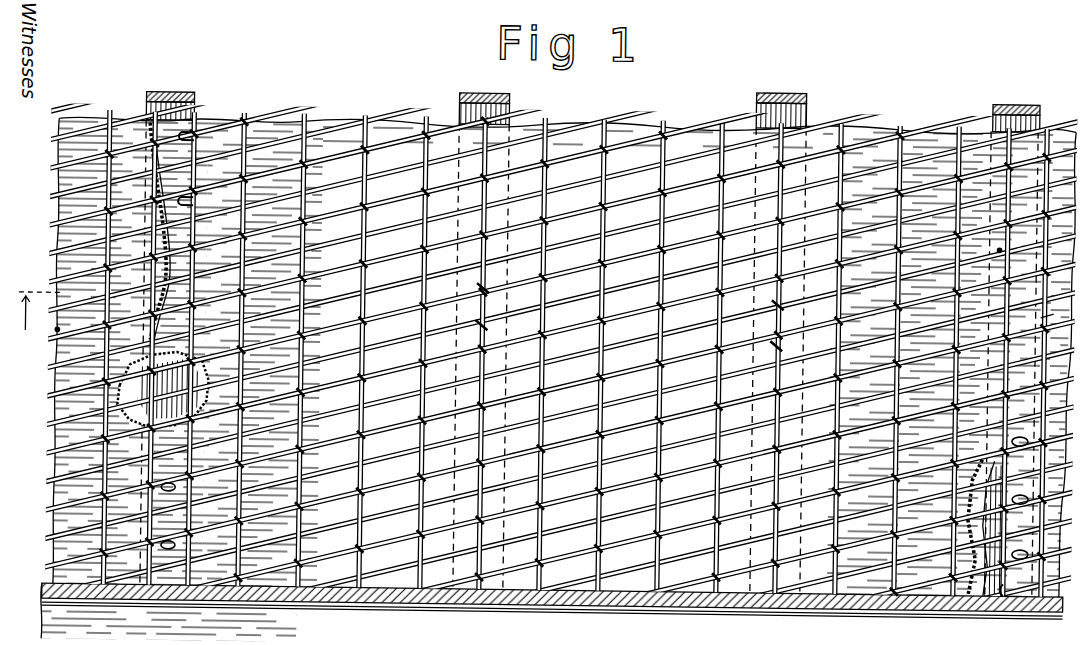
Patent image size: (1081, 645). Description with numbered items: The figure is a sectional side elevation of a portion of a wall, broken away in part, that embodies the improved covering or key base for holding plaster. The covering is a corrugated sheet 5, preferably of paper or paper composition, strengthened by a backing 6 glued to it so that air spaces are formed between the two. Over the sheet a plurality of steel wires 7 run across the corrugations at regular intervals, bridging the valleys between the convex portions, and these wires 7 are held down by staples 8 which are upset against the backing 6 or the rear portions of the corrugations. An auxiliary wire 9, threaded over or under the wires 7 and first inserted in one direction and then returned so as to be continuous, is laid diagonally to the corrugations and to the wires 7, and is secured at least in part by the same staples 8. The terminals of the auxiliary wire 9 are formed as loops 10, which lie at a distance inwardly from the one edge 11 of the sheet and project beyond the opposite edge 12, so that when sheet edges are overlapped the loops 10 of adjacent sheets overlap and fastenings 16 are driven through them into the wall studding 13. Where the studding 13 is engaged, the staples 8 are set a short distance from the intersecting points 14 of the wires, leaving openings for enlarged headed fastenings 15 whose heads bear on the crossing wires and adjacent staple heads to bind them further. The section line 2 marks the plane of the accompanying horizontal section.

The section line 2— 2 is at (535, 314).
The corrugated sheet 5 is at (344, 127).
The backing sheet 6 is at (147, 128).
The wires 7 is at (107, 122).
The staples 8 is at (89, 222).
The auxiliary wire 9 is at (581, 219).
The loops 10 is at (172, 579).
The one edge 11 is at (194, 137).
The opposite edge 12 is at (989, 122).
The wall studding 13 is at (187, 97).
The intersecting points 14 is at (485, 288).
The enlarged headed fastenings 15 is at (478, 294).
The fastenings 16 is at (56, 336).